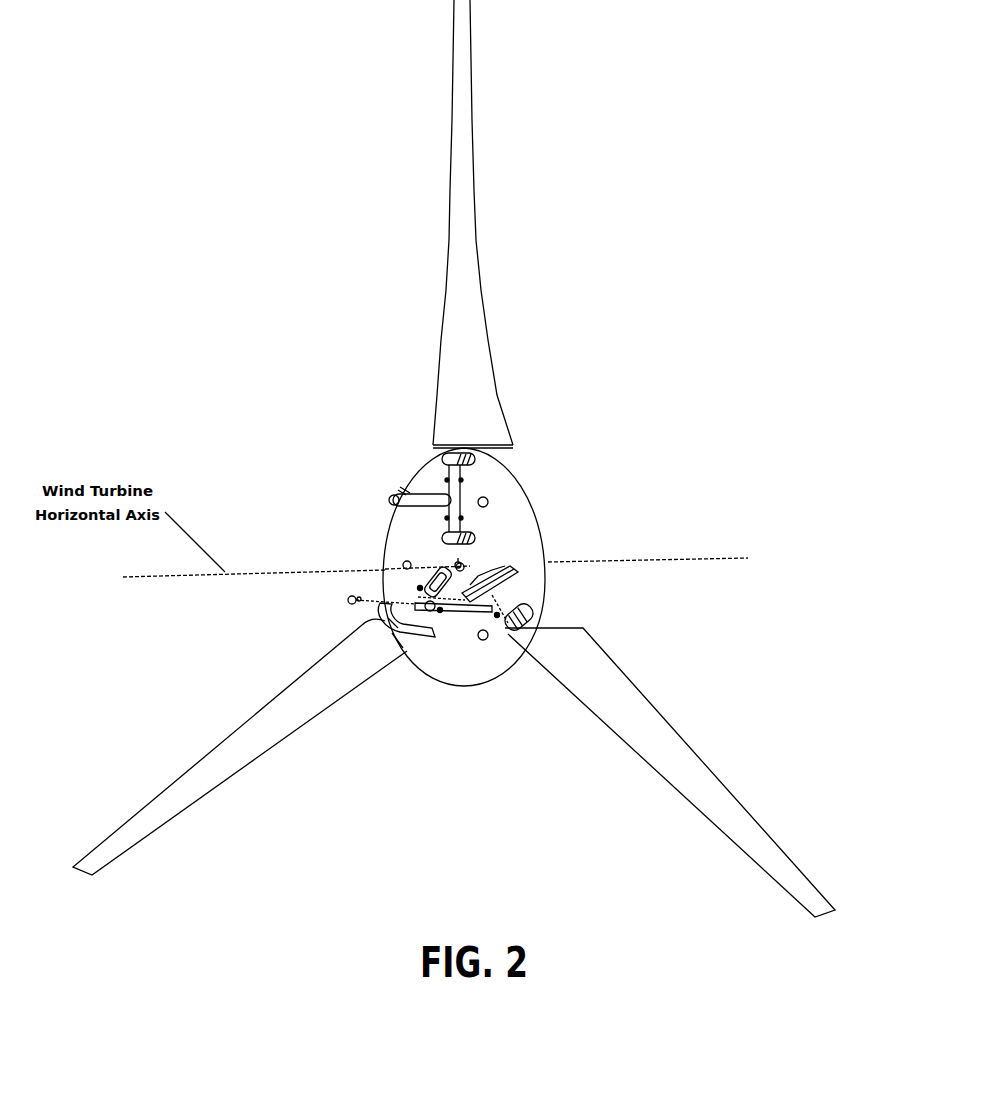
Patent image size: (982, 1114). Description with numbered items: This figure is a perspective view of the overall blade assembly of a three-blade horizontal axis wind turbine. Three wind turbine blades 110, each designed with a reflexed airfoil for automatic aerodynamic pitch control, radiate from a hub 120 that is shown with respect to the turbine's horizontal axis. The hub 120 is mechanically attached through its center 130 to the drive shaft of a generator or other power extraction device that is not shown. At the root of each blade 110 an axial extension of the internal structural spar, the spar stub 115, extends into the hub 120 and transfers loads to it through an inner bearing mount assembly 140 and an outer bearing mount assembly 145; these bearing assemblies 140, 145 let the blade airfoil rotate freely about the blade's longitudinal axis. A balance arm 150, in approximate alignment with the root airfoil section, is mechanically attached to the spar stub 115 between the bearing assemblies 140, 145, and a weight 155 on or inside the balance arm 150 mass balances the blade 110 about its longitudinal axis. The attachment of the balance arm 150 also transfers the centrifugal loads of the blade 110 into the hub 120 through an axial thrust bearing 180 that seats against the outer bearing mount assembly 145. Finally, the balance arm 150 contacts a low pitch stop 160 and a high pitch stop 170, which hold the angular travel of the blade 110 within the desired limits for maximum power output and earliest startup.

The wind turbine blade 110 is at (460, 218).
The spar stub 115 is at (457, 447).
The hub 120 is at (544, 561).
The center of the hub 130 is at (468, 563).
The inner bearing mount assembly 140 is at (445, 536).
The outer bearing mount assembly 145 is at (433, 445).
The balance arm 150 is at (400, 493).
The weight 155 is at (350, 603).
The low pitch stop 160 is at (480, 638).
The high pitch stop 170 is at (532, 593).
The axial thrust bearing 180 is at (478, 458).